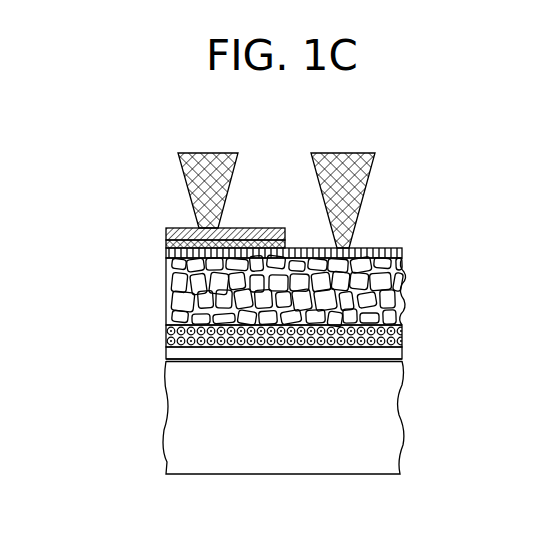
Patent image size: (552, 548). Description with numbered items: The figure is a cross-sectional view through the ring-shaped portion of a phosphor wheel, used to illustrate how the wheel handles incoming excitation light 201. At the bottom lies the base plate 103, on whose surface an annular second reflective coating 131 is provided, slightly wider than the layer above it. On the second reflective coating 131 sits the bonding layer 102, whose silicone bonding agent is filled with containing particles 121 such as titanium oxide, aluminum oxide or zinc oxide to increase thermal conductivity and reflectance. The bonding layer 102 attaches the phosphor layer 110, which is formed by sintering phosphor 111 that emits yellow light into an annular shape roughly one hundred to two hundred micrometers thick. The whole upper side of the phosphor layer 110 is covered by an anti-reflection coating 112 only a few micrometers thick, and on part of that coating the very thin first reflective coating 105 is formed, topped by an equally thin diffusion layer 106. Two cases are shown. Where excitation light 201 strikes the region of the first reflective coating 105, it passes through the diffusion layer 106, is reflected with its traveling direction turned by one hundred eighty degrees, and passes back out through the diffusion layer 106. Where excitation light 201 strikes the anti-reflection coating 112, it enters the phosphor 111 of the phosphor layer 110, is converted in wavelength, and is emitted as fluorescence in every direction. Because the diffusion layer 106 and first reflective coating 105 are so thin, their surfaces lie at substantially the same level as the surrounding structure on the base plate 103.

The excitation light 201 is at (276, 170).
The diffusion layer 106 is at (168, 227).
The first reflective coating 105 is at (167, 245).
The anti-reflection coating 112 is at (383, 253).
The phosphor layer 110 is at (405, 278).
The phosphor 111 is at (177, 309).
The containing particles 121 is at (395, 343).
The bonding layer 102 is at (166, 346).
The second reflective coating 131 is at (350, 352).
The base plate 103 is at (380, 443).